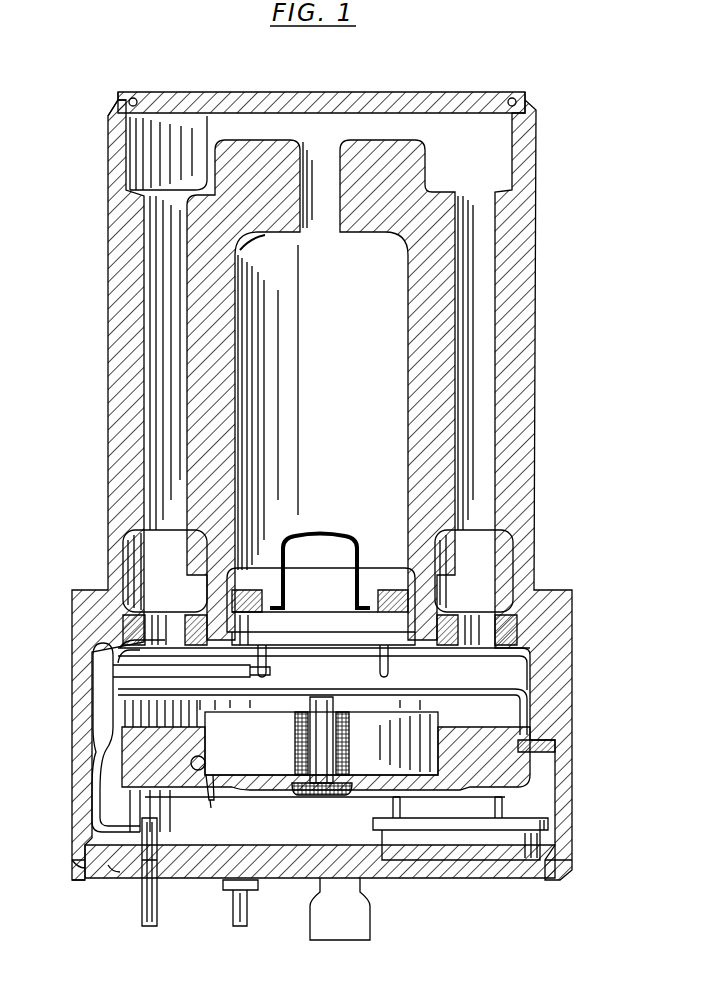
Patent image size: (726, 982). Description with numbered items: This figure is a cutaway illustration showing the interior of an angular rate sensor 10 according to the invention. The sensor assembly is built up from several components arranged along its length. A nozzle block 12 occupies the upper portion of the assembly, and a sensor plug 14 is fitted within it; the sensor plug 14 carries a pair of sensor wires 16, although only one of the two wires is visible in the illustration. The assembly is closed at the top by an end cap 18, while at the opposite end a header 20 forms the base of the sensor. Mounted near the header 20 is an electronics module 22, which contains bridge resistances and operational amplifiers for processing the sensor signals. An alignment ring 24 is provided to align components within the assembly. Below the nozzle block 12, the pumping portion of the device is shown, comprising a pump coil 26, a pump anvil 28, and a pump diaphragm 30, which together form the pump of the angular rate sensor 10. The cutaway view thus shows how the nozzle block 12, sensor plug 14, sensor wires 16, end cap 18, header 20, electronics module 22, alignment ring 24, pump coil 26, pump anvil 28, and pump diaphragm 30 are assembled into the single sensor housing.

The angular rate sensor 10 is at (584, 84).
The nozzle block 12 is at (528, 348).
The sensor plug 14 is at (302, 622).
The sensor wires 16 is at (318, 540).
The end cap 18 is at (334, 91).
The header 20 is at (120, 878).
The electronics module 22 is at (375, 822).
The alignment ring 24 is at (100, 640).
The pump coil 26 is at (270, 752).
The pump anvil 28 is at (204, 790).
The pump diaphragm 30 is at (408, 692).